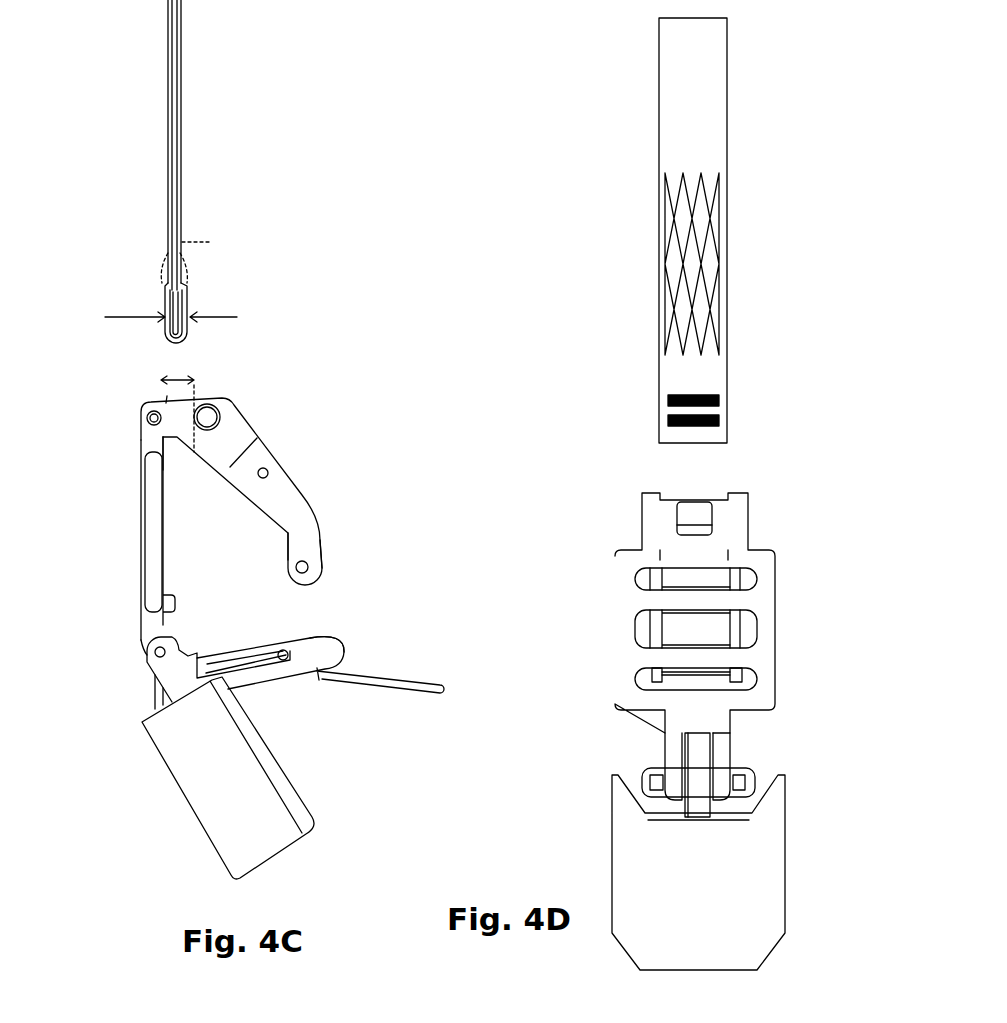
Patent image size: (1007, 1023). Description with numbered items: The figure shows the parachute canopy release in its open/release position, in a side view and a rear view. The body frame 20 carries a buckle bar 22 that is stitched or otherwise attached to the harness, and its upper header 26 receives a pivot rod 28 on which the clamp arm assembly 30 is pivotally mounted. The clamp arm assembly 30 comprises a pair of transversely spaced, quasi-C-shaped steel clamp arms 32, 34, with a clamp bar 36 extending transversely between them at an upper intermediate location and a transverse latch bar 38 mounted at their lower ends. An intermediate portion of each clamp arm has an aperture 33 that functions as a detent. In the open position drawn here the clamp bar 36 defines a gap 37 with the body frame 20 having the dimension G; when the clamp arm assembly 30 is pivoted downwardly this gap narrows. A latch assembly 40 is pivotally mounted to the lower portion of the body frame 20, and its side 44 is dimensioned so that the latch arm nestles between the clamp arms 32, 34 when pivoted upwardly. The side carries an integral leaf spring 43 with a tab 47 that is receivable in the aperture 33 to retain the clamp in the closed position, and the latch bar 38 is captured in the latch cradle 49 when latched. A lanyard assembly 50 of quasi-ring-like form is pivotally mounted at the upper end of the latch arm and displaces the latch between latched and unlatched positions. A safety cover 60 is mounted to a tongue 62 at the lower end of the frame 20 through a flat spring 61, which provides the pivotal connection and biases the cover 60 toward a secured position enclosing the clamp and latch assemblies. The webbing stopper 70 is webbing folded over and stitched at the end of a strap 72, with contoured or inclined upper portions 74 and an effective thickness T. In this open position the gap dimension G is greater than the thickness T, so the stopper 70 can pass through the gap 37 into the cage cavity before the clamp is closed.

In FIG. 4D, the body frame 20 is at (772, 602).
In FIG. 4C, the buckle bar 22 is at (148, 523).
In FIG. 4C, the upper header 26 is at (148, 445).
In FIG. 4C, the pivot rod 28 is at (149, 412).
In FIG. 4D, the pivot rod 28 is at (670, 518).
In FIG. 4C, the clamp arm assembly 30 is at (283, 411).
In FIG. 4C, the clamp arm 32 is at (290, 500).
In FIG. 4D, the clamp arm 32 is at (733, 632).
In FIG. 4C, the aperture 33 is at (265, 468).
In FIG. 4D, the clamp arm 34 is at (655, 633).
In FIG. 4C, the clamp bar 36 is at (212, 403).
In FIG. 4C, the gap 37 is at (186, 446).
In FIG. 4C, the latch bar 38 is at (306, 570).
In FIG. 4C, the latch assembly 40 is at (300, 689).
In FIG. 4C, the leaf spring 43 is at (240, 650).
In FIG. 4C, the side 44 is at (335, 634).
In FIG. 4C, the tab 47 is at (278, 650).
In FIG. 4C, the latch cradle 49 is at (180, 643).
In FIG. 4C, the lanyard assembly 50 is at (420, 688).
In FIG. 4D, the lanyard assembly 50 is at (750, 780).
In FIG. 4C, the safety cover 60 is at (164, 799).
In FIG. 4D, the safety cover 60 is at (725, 900).
In FIG. 4C, the flat spring 61 is at (157, 697).
In FIG. 4D, the flat spring 61 is at (700, 783).
In FIG. 4D, the tongue 62 is at (717, 740).
In FIG. 4C, the webbing stopper 70 is at (173, 307).
In FIG. 4D, the webbing stopper 70 is at (722, 406).
In FIG. 4C, the strap 72 is at (181, 177).
In FIG. 4D, the strap 72 is at (722, 272).
In FIG. 4C, the upper portion 74 is at (189, 270).
In FIG. 4C, the effective thickness T is at (130, 315).
In FIG. 4C, the gap dimension G is at (172, 377).